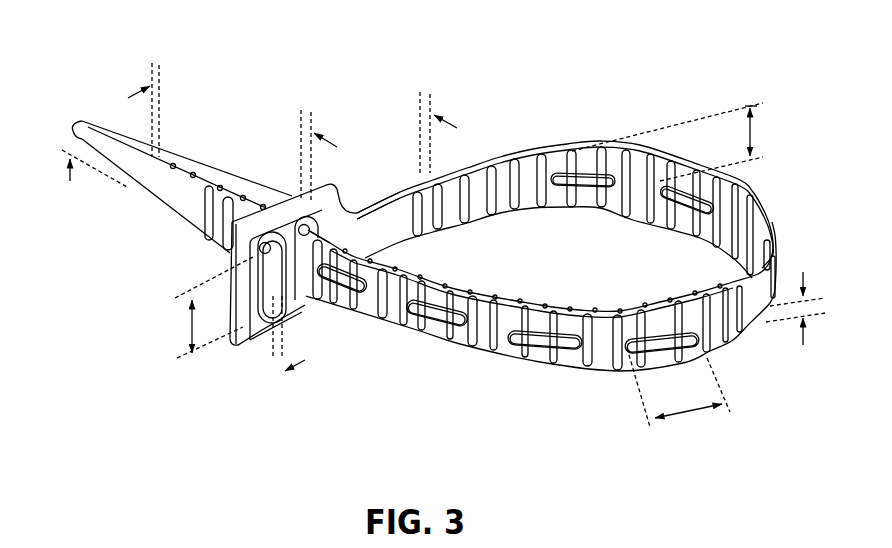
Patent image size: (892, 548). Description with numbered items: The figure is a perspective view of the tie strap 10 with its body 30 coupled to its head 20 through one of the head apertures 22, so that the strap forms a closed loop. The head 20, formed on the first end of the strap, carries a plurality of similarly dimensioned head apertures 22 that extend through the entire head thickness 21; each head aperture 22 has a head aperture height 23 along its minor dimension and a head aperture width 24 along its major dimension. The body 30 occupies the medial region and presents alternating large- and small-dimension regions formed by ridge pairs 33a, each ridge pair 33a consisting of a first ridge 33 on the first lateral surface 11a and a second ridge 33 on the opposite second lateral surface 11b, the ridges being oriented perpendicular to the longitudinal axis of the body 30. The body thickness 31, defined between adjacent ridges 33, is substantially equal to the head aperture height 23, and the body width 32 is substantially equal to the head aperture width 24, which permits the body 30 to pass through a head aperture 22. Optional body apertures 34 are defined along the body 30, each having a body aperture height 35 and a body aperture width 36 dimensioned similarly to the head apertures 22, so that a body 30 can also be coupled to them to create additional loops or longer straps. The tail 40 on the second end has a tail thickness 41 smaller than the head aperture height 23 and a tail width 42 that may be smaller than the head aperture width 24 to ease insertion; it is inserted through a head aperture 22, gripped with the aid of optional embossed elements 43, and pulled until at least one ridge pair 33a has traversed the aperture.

The tie strap 10 is at (685, 63).
The first lateral surface 11a is at (497, 156).
The second lateral surface 11b is at (511, 160).
The head 20 is at (240, 343).
The head thickness 21 is at (297, 122).
The head aperture 22 is at (280, 291).
The head aperture height 23 is at (270, 379).
The head aperture width 24 is at (190, 333).
The body 30 is at (757, 212).
The body thickness 31 is at (416, 104).
The body width 32 is at (752, 127).
The ridge 33 is at (528, 318).
The ridge pair 33a is at (473, 305).
The body aperture 34 is at (548, 338).
The body aperture height 35 is at (806, 283).
The body aperture width 36 is at (683, 420).
The tail 40 is at (88, 121).
The tail thickness 41 is at (165, 78).
The tail width 42 is at (70, 176).
The embossed element 43 is at (138, 184).